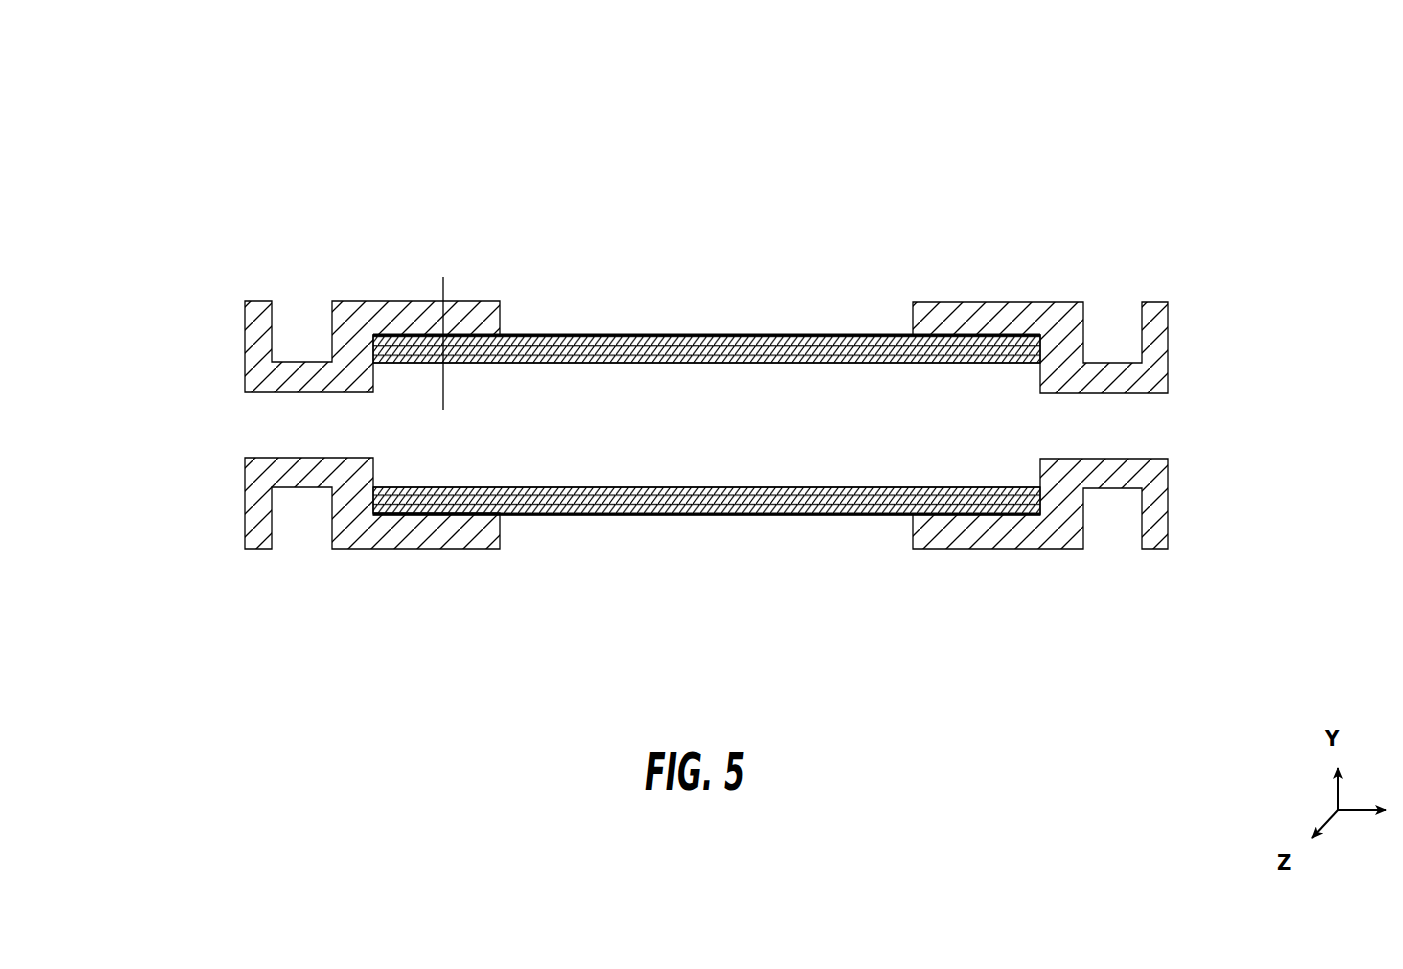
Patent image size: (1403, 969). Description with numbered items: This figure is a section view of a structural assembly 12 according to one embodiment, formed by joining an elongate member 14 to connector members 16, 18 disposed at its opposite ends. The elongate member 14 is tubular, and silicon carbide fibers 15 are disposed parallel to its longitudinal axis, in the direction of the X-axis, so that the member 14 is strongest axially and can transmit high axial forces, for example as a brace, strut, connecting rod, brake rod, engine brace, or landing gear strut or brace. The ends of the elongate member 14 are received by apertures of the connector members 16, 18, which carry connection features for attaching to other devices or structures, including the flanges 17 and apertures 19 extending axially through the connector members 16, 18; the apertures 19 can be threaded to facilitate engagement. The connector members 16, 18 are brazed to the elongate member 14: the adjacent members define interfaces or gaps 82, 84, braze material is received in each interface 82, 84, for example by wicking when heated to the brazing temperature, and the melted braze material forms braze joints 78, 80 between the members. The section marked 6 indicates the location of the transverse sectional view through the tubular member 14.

The structural assembly 12 is at (800, 118).
The elongate member 14 is at (748, 337).
The silicon carbide fibers 15 is at (645, 337).
The connector member 16 is at (340, 303).
The flange 17 is at (245, 528).
The connector member 18 is at (1168, 512).
The aperture 19 is at (227, 415).
The braze joint 78 is at (505, 333).
The braze joint 80 is at (893, 520).
The interface 82 is at (505, 517).
The interface 84 is at (890, 323).
The section line 6- 6 is at (443, 277).